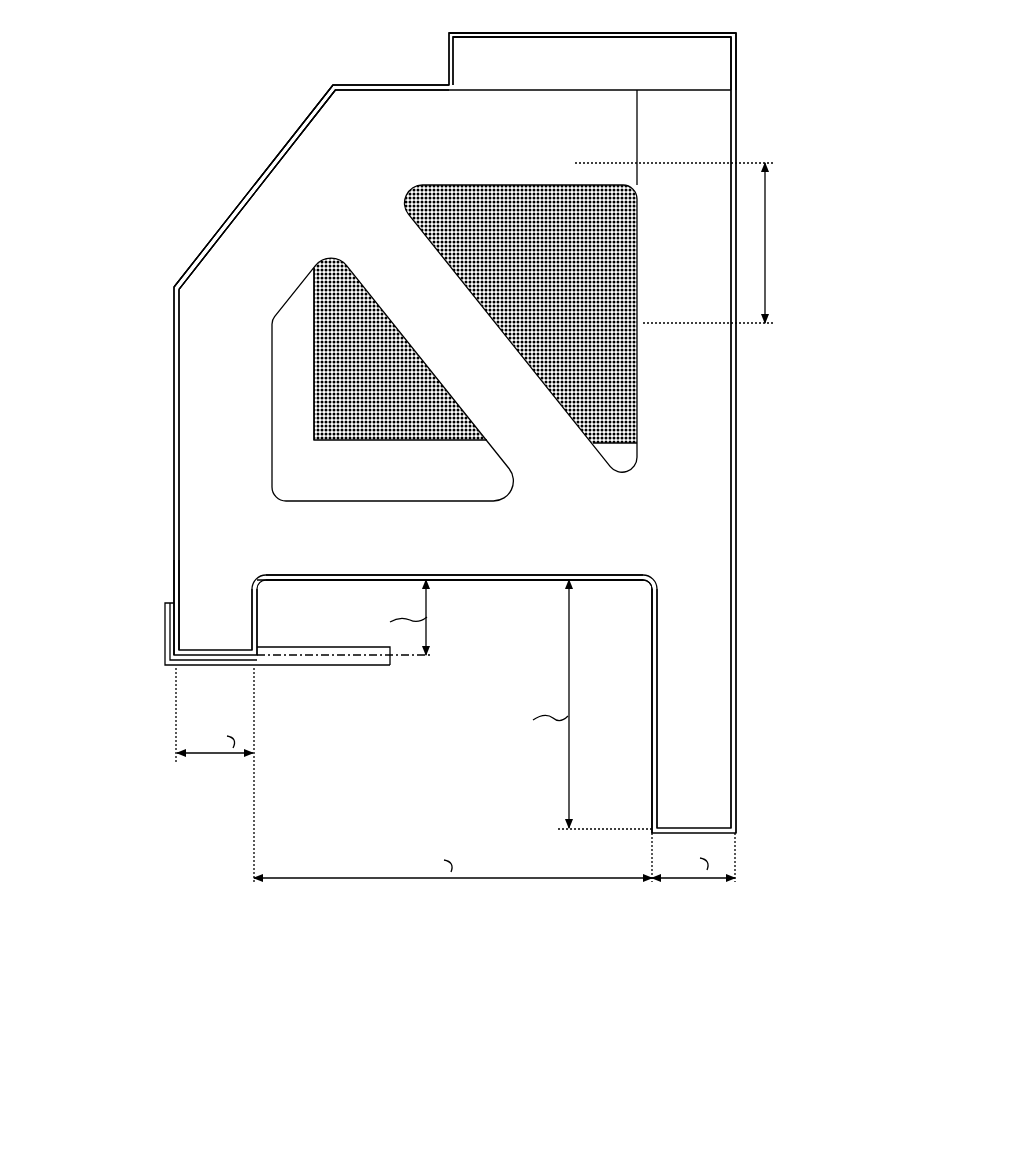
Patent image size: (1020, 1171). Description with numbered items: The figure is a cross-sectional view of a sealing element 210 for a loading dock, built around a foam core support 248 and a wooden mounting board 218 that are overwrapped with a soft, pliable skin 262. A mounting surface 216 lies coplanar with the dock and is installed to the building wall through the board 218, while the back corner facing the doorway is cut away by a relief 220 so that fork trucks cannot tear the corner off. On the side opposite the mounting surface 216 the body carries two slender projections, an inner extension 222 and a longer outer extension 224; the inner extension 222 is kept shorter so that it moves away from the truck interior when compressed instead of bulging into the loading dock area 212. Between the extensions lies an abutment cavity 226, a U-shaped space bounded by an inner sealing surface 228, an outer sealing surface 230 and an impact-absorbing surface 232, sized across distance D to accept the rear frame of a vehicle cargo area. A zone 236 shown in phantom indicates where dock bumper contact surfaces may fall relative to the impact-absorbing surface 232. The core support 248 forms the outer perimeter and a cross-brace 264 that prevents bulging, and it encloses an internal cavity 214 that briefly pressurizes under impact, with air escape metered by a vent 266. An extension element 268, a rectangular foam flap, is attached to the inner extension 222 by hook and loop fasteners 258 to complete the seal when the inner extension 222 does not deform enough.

The sealing element 210 is at (174, 100).
The loading dock area 212 is at (83, 368).
The internal cavity 214 is at (391, 476).
The mounting surface 216 is at (538, 33).
The mounting board 218 is at (605, 45).
The relief 220 is at (257, 187).
The inner extension 222 is at (185, 578).
The outer extension 224 is at (721, 720).
The abutment cavity 226 is at (519, 654).
The inner sealing surface 228 is at (258, 622).
The outer sealing surface 230 is at (652, 745).
The impact-absorbing surface 232 is at (478, 582).
The zone 236 is at (767, 243).
The core support 248 is at (357, 138).
The hook and loop fasteners 258 is at (172, 635).
The skin 262 is at (171, 447).
The cross-brace 264 is at (445, 306).
The vent 266 is at (315, 343).
The extension element 268 is at (357, 679).